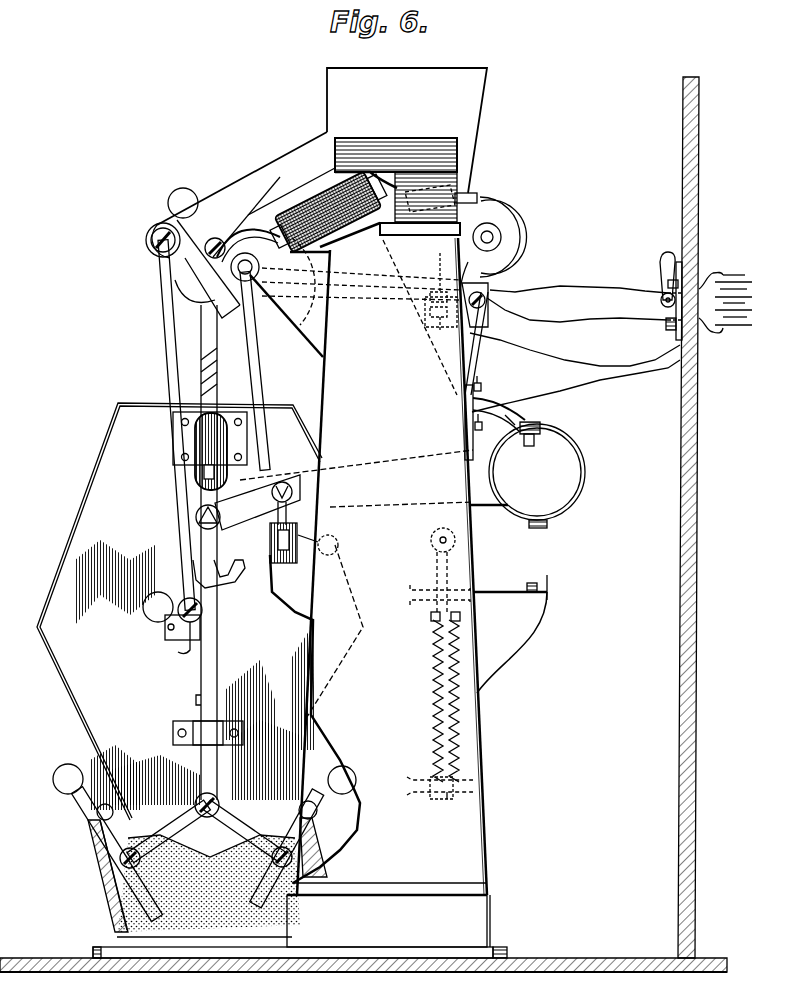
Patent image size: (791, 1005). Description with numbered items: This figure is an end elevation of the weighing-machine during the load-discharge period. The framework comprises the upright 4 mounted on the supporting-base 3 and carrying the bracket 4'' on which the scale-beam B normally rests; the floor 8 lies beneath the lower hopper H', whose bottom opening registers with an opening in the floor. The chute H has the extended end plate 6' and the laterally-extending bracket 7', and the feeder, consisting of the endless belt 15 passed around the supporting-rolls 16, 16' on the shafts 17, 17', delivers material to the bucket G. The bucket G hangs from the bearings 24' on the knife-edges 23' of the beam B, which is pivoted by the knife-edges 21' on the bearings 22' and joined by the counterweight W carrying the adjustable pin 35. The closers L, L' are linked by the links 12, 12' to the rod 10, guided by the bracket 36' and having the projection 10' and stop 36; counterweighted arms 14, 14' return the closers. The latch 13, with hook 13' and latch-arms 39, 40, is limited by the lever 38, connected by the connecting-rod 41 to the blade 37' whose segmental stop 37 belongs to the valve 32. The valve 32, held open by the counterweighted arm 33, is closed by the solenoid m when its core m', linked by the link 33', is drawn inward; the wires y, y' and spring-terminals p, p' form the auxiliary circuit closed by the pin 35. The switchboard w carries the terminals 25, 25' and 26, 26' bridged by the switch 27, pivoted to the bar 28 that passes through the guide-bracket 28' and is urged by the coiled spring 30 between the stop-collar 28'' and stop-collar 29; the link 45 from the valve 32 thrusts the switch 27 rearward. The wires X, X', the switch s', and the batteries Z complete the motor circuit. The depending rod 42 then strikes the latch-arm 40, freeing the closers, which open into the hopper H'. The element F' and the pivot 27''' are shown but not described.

The chute or hopper H is at (407, 130).
The hopper H' is at (187, 877).
The bucket G is at (80, 516).
The supporting-base 3 is at (388, 915).
The floor 8 is at (375, 955).
The upright or column 4 is at (392, 566).
The bracket 4'' is at (522, 634).
The extended end plate 6' is at (243, 195).
The laterally-extending bracket 7' is at (375, 184).
The solenoid m is at (327, 212).
The core m' is at (396, 169).
The wheel F' is at (491, 227).
The shaft 17 is at (507, 215).
The supporting-roll 16 is at (514, 226).
The endless belt or apron 15 is at (470, 270).
The shaft 17' is at (270, 268).
The supporting-roll 16' is at (242, 234).
The counterweighted arm 33 is at (160, 203).
The link 33' is at (230, 222).
The stop 37 is at (206, 297).
The blade 37' is at (170, 262).
The valve 32 is at (188, 292).
The rod 10 is at (239, 552).
The projection 10' is at (179, 689).
The stop 36 is at (169, 372).
The bracket 36' is at (215, 716).
The connecting-rod 41 is at (258, 385).
The depending rod 42 is at (172, 340).
The connecting link or rod 45 is at (365, 298).
The terminal 26 is at (438, 272).
The terminal 26' is at (422, 292).
The terminal 25 is at (439, 334).
The terminal 25' is at (409, 313).
The switchboard or box w is at (488, 290).
The circuit-controller or switch 27 is at (490, 343).
The hinge 27''' is at (416, 541).
The bar or rod 28 is at (428, 582).
The guide-bracket 28' is at (427, 800).
The stop-collar 28'' is at (417, 623).
The stop-collar 29 is at (448, 800).
The coiled spring 30 is at (433, 656).
The spring-terminal p is at (495, 418).
The spring-terminal p' is at (505, 438).
The adjustable pin 35 is at (529, 446).
The combined connecting-shaft and counterweight W is at (583, 487).
The scale-beam B is at (484, 506).
The bearing 24' is at (188, 453).
The knife-edge 23' is at (215, 502).
The knife-edge 21' is at (310, 481).
The bearing 22' is at (313, 504).
The lever 38 is at (323, 545).
The latch-arm 39 is at (270, 568).
The latch-arm 40 is at (193, 570).
The latch 13 is at (169, 596).
The hook 13' is at (164, 647).
The link 12 is at (169, 829).
The link 12' is at (248, 830).
The counterweighted arm 14 is at (62, 791).
The counterweighted arm 14' is at (343, 797).
The closer L is at (114, 854).
The closer L' is at (301, 848).
The conductor or wire X is at (579, 282).
The conductor or wire X' is at (577, 310).
The conductor or wire y is at (575, 353).
The conductor or wire y' is at (576, 386).
The switch s' is at (660, 296).
The batteries Z is at (725, 274).